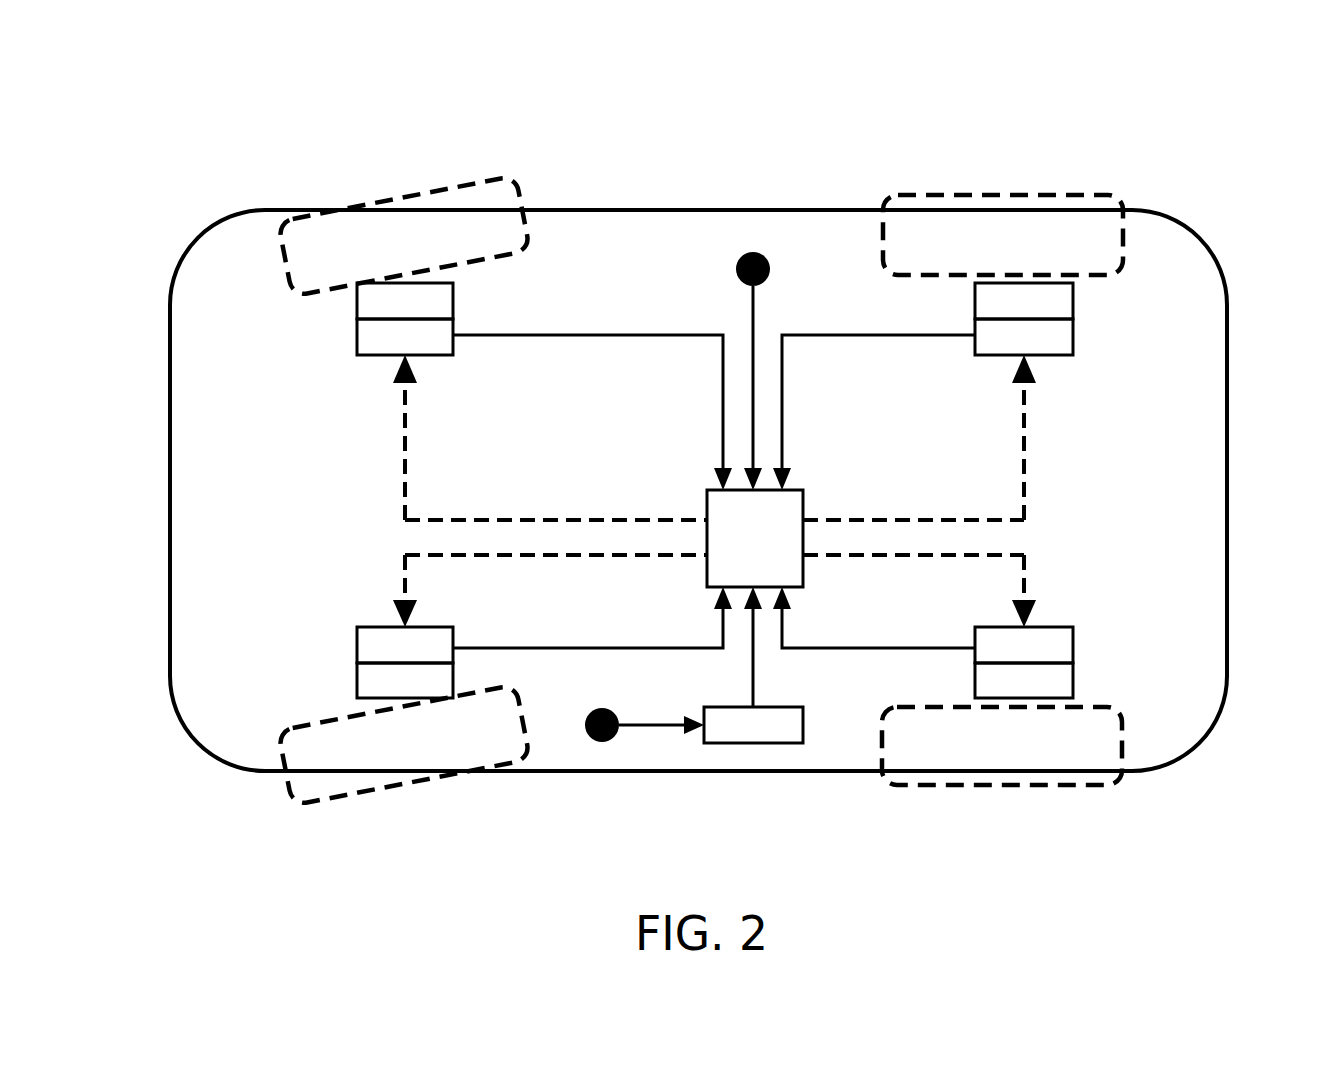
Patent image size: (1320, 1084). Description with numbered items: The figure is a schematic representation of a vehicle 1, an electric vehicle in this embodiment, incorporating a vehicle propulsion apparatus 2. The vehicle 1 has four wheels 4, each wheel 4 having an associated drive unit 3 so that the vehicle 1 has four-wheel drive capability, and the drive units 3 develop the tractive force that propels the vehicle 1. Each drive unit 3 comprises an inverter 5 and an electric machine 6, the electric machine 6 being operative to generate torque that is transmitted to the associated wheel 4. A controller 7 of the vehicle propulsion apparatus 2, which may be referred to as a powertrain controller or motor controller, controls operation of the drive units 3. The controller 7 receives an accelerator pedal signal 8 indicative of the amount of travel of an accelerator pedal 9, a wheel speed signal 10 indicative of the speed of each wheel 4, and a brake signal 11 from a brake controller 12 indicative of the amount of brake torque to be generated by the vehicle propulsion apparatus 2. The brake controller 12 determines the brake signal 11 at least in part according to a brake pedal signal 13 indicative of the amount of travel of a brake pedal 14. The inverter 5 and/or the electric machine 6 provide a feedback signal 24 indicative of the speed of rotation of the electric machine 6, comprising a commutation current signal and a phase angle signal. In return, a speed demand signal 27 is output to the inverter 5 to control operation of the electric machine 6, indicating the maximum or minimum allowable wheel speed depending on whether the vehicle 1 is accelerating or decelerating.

The vehicle 1 is at (1155, 159).
The vehicle propulsion apparatus 2 is at (605, 235).
The drive unit 3 is at (705, 490).
The wheel 4 is at (408, 222).
The inverter 5 is at (715, 508).
The electric machine 6 is at (715, 473).
The controller 7 is at (755, 538).
The accelerator pedal signal 8 is at (760, 388).
The accelerator pedal 9 is at (745, 256).
The wheel speed signal 10 is at (714, 477).
The brake signal 11 is at (741, 647).
The brake controller 12 is at (753, 725).
The brake pedal signal 13 is at (661, 716).
The brake pedal 14 is at (592, 740).
The feedback signal 24 is at (714, 477).
The speed demand signal 27 is at (714, 491).